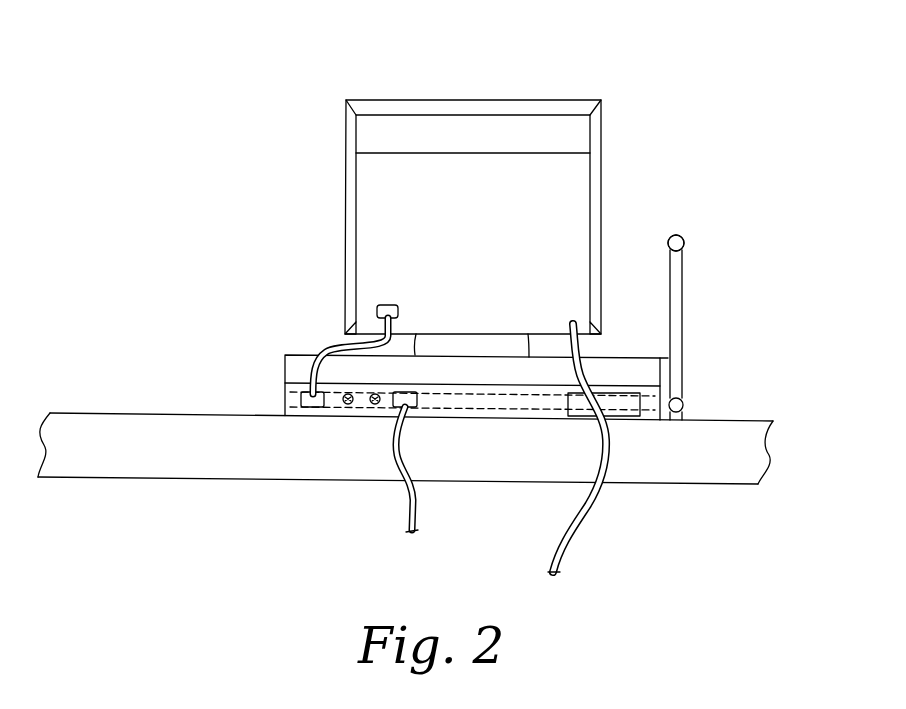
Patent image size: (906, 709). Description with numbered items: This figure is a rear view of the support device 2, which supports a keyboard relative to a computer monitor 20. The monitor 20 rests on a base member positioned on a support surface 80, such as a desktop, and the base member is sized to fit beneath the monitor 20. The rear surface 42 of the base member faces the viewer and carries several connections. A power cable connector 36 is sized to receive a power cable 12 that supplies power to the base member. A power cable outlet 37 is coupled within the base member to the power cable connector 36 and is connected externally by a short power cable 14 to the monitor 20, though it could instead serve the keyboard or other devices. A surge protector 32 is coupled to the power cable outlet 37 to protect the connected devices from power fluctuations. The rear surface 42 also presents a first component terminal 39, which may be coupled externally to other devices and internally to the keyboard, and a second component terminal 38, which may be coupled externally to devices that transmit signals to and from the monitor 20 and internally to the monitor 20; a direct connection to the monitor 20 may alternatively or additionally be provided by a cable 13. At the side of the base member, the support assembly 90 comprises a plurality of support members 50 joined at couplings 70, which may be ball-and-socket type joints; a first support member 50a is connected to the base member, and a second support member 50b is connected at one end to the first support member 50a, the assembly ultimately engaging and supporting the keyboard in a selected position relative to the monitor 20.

The support device 2 is at (219, 274).
The power cable 12 is at (415, 508).
The cable 13 is at (570, 548).
The short power cable 14 is at (330, 348).
The computer monitor 20 is at (557, 100).
The surge protector 32 is at (638, 420).
The power cable connector 36 is at (417, 410).
The power cable outlet 37 is at (330, 409).
The second component terminal 38 is at (375, 408).
The first component terminal 39 is at (350, 406).
The rear surface 42 is at (285, 385).
The support members 50 is at (696, 294).
The first support member 50a is at (666, 355).
The second support member 50b is at (684, 368).
The couplings 70 is at (694, 229).
The support surface 80 is at (80, 412).
The support assembly 90 is at (740, 352).